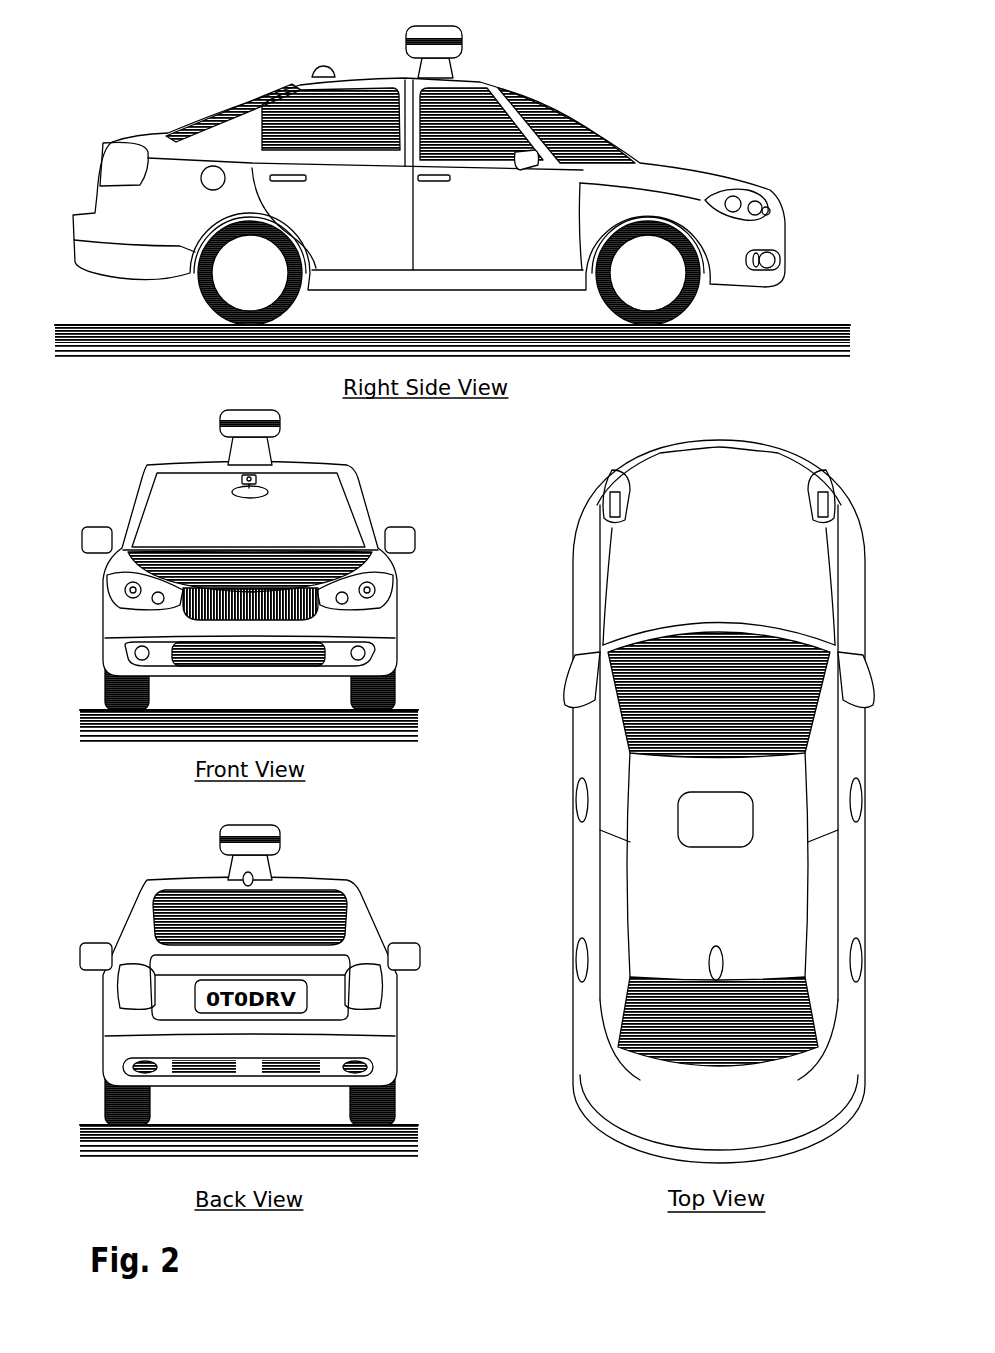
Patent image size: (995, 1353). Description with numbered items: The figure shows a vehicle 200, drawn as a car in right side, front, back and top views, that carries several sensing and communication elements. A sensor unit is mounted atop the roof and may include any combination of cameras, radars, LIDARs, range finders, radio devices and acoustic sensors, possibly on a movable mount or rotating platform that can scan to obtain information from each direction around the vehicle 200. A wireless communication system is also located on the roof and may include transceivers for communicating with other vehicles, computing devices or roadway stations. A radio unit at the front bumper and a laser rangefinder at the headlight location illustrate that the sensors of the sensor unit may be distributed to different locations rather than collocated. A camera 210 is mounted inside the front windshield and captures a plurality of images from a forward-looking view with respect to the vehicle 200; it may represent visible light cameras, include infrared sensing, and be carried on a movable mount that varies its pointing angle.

The vehicle 200 is at (66, 122).
The camera 210 is at (258, 478).